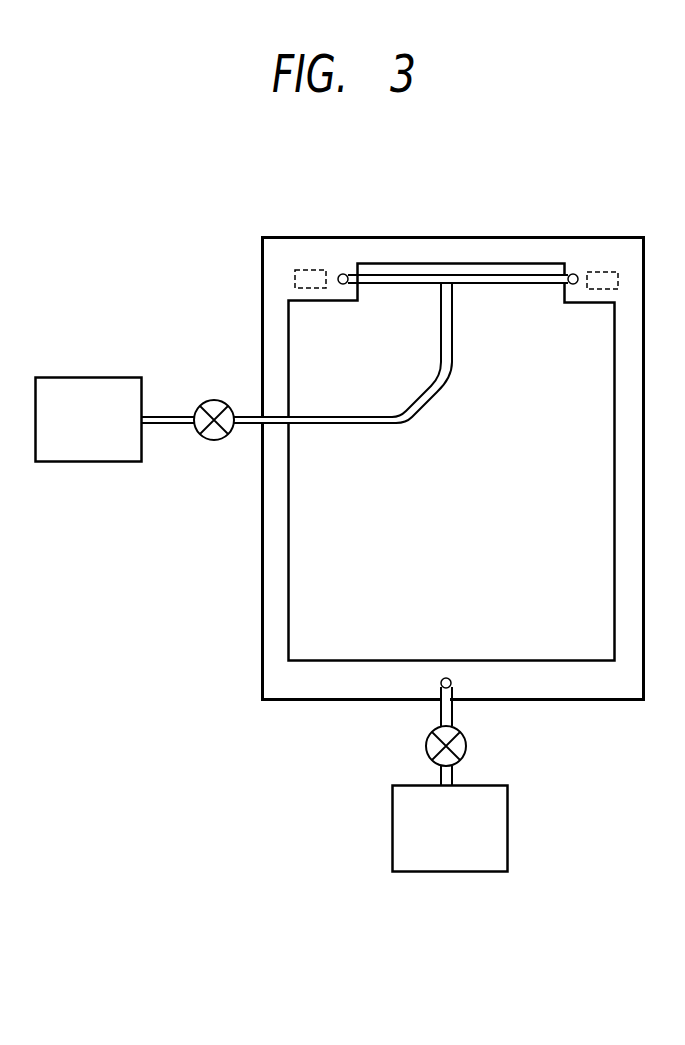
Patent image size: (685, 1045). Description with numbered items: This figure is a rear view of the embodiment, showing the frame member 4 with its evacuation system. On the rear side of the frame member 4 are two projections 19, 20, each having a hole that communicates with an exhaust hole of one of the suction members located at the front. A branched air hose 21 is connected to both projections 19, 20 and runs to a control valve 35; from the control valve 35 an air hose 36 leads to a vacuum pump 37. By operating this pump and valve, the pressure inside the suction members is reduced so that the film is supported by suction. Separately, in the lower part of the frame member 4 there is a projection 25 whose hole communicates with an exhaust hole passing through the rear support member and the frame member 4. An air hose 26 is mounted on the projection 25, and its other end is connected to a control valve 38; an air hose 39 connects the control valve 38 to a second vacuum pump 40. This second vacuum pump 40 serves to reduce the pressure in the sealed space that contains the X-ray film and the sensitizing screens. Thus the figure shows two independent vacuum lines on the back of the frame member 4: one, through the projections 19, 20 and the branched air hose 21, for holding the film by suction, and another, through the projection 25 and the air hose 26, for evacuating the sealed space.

The frame member 4 is at (277, 245).
The projection 19 is at (571, 273).
The projection 20 is at (345, 272).
The branched air hose 21 is at (413, 277).
The projection 25 is at (441, 684).
The air hose 26 is at (452, 718).
The control valve 35 is at (214, 398).
The air hose 36 is at (175, 410).
The vacuum pump 37 is at (117, 376).
The control valve 38 is at (425, 745).
The air hose 39 is at (453, 773).
The vacuum pump 40 is at (392, 806).